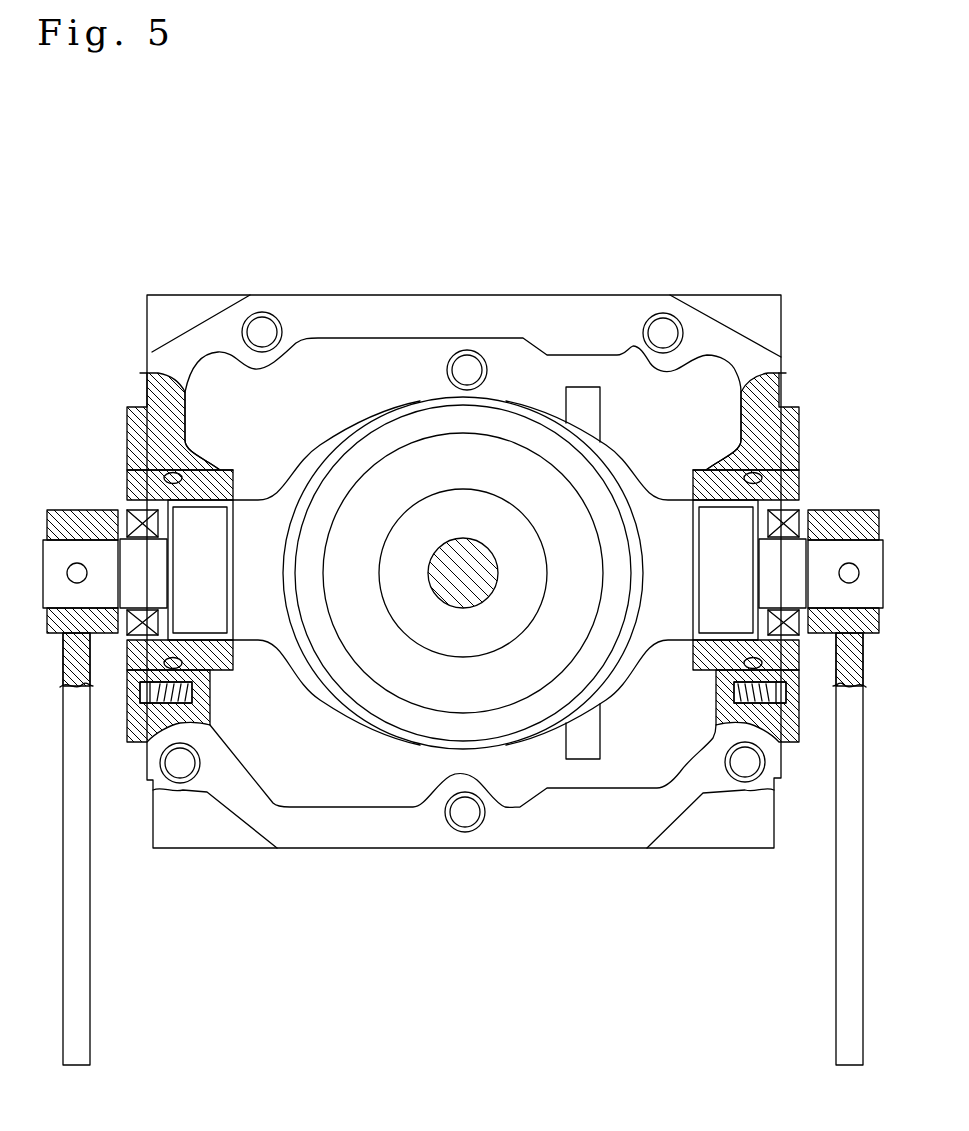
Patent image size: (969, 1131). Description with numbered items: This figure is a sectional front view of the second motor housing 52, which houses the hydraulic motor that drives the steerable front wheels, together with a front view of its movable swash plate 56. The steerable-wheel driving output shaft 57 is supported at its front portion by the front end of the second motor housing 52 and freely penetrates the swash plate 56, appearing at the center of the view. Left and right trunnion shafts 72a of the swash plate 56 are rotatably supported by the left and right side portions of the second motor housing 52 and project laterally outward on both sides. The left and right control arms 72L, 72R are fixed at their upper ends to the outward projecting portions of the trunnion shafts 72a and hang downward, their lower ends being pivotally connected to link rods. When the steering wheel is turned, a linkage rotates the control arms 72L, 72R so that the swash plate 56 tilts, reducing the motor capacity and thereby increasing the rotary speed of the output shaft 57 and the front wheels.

The second motor housing 52 is at (542, 294).
The movable swash plate 56 is at (350, 431).
The steerable-wheel driving output shaft 57 is at (462, 608).
The trunnion shaft 72a is at (87, 550).
The right control arm 72R is at (90, 945).
The left control arm 72L is at (838, 975).